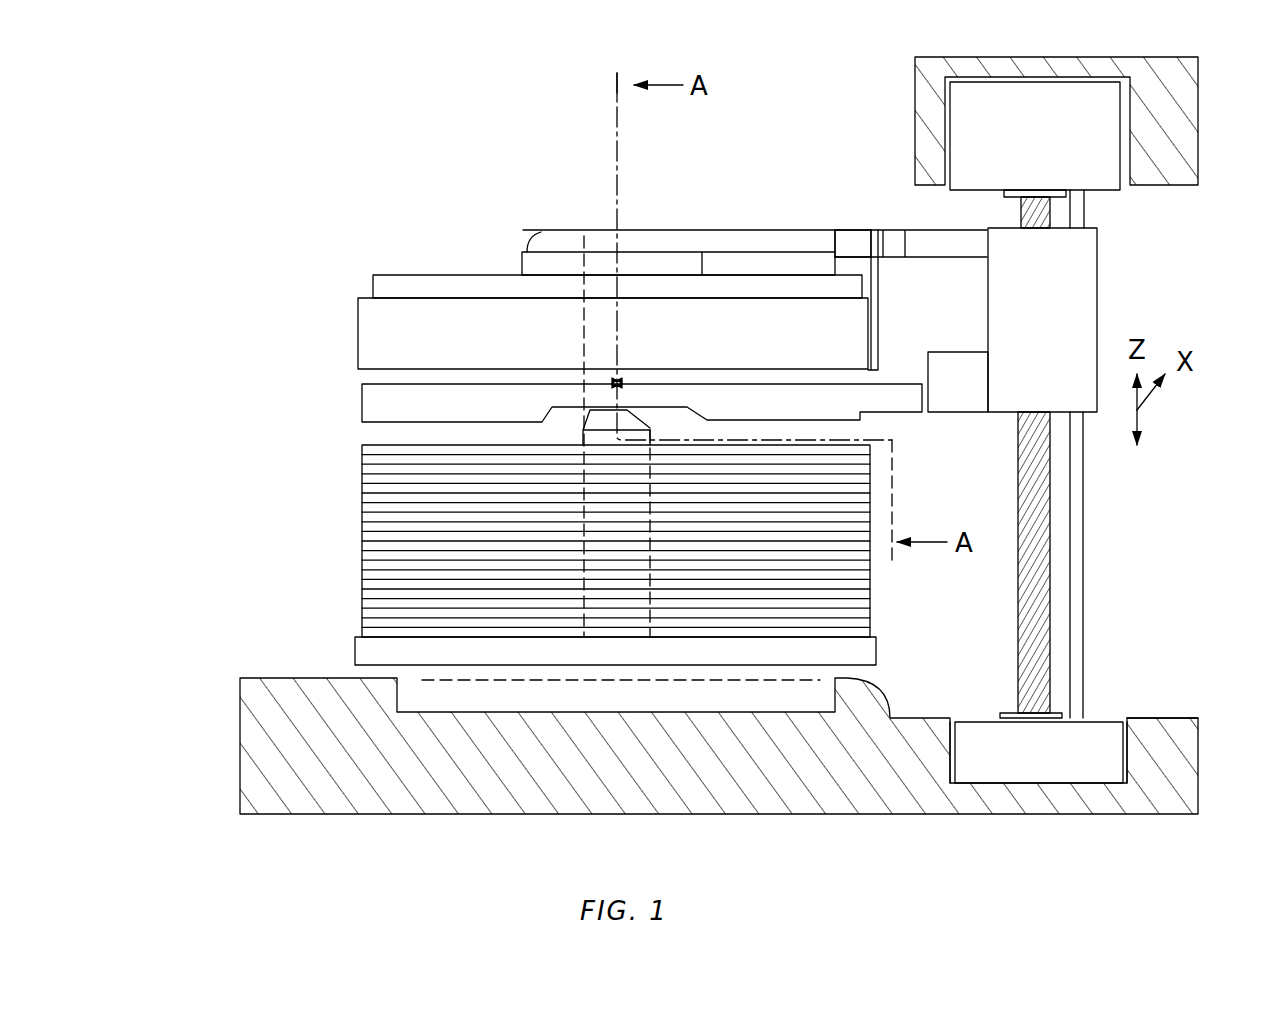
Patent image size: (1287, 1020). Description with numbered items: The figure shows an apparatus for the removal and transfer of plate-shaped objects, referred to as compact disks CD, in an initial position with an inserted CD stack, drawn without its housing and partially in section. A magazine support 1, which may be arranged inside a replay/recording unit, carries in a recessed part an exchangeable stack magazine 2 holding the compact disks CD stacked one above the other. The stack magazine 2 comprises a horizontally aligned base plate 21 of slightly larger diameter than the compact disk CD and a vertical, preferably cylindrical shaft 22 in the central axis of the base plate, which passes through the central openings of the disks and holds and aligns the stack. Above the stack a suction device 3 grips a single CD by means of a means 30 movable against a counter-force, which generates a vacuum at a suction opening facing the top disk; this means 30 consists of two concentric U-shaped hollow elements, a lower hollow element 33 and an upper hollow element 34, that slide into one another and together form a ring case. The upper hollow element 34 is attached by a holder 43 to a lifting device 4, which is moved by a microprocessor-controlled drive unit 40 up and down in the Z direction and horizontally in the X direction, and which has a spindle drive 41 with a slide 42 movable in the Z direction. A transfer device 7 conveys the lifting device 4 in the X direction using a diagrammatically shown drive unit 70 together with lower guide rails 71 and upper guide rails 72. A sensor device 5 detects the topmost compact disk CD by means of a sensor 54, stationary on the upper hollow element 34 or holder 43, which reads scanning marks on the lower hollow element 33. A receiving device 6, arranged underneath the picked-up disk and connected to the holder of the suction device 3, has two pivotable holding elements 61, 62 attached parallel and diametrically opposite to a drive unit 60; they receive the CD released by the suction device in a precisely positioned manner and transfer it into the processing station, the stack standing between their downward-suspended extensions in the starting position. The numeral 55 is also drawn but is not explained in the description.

The magazine support 1 is at (398, 699).
The stack magazine 2 is at (356, 546).
The base plate 21 is at (355, 648).
The shaft 22 is at (601, 418).
The suction device 3 is at (321, 238).
The means movable against a counter-force 30 is at (370, 285).
The lower hollow element 33 is at (368, 345).
The upper hollow element 34 is at (462, 275).
The holder 43 is at (533, 232).
The lifting device 4 is at (1090, 553).
The drive unit 40 is at (1052, 770).
The spindle drive 41 is at (998, 283).
The slide 42 is at (1017, 635).
The sensor device 5 is at (876, 213).
The sensor 54 is at (855, 230).
The guide rod 55 is at (882, 278).
The receiving device 6 is at (328, 420).
The drive unit 60 is at (968, 402).
The holding element 61 is at (592, 389).
The holding element 62 is at (362, 405).
The transfer device 7 is at (1091, 202).
The drive unit 70 is at (1092, 143).
The lower guide rails 71 is at (1130, 720).
The upper guide rails 72 is at (1180, 138).
The compact disk CD is at (357, 452).